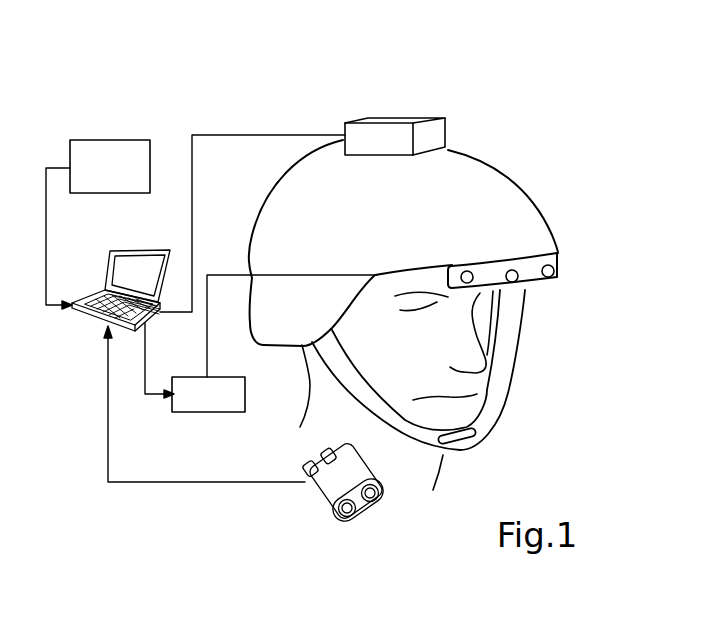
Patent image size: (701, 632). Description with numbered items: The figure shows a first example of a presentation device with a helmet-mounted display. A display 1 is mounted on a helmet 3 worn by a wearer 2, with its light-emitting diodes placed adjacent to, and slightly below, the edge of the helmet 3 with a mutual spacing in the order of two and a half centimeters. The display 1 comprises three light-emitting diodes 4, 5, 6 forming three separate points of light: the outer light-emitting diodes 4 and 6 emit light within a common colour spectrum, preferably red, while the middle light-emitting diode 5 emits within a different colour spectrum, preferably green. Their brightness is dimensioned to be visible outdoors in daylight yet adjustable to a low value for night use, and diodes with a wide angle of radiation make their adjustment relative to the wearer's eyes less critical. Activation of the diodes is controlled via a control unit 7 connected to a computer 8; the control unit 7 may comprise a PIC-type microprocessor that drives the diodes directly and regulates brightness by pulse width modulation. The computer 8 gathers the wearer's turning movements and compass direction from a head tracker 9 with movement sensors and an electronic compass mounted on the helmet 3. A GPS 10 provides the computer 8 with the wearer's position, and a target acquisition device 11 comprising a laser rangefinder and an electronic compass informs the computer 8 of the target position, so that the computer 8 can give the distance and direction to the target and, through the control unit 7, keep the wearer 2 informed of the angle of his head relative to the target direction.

The display 1 is at (558, 267).
The wearer 2 is at (405, 380).
The helmet 3 is at (458, 178).
The light-emitting diode 4 is at (470, 283).
The light-emitting diode 5 is at (516, 283).
The light-emitting diode 6 is at (552, 278).
The control unit 7 is at (207, 412).
The computer 8 is at (92, 305).
The head tracker 9 is at (403, 117).
The GPS 10 is at (110, 140).
The target acquisition device 11 is at (323, 492).